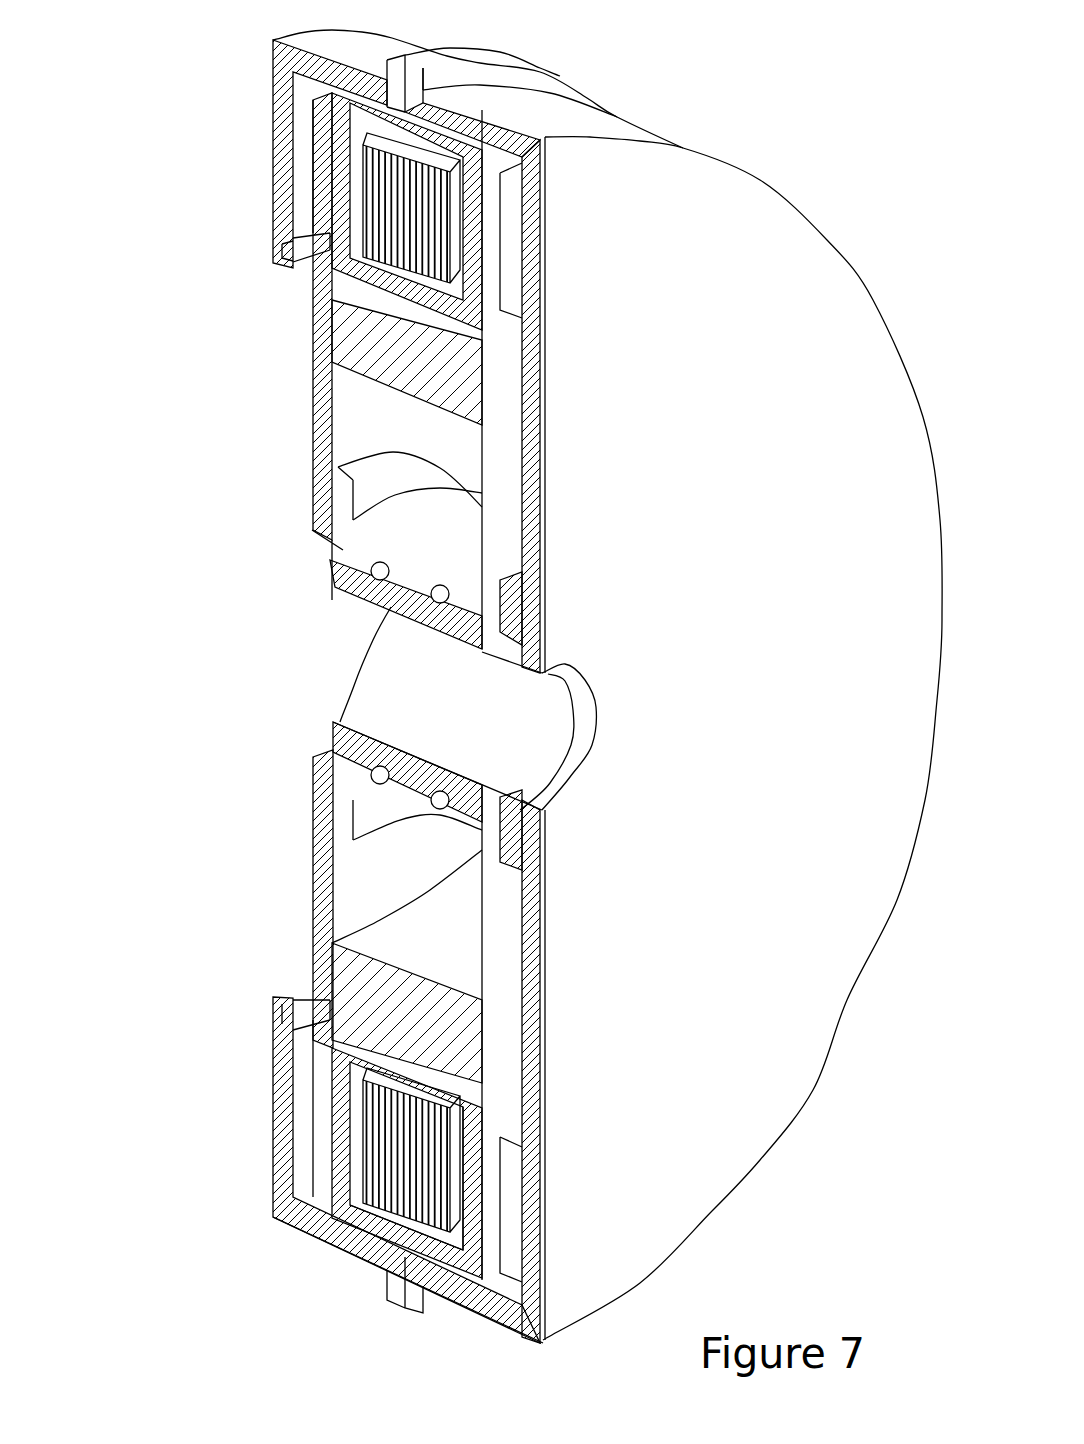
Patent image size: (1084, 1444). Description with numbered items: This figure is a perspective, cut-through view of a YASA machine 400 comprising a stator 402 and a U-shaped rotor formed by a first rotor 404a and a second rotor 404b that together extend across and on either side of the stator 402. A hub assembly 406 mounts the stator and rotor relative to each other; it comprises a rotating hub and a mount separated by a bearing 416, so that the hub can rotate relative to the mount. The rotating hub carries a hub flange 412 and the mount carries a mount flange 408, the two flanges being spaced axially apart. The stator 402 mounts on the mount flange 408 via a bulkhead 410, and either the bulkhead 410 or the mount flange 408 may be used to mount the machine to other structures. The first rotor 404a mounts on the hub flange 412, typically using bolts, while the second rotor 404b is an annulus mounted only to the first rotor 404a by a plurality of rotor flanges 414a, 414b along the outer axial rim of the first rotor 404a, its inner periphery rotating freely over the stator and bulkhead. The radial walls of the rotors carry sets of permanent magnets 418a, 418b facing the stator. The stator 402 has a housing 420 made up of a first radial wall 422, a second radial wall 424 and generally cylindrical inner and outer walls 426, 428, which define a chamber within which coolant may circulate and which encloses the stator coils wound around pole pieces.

The YASA machine 400 is at (175, 124).
The stator 402 is at (347, 1192).
The first rotor 404a is at (665, 237).
The second rotor 404b is at (290, 65).
The hub assembly 406 is at (445, 697).
The mount flange 408 is at (363, 490).
The bulkhead 410 is at (318, 398).
The hub flange 412 is at (513, 605).
The rotor flange 414a is at (470, 65).
The rotor flange 414b is at (390, 72).
The bearing 416 is at (380, 567).
The permanent magnets 418a is at (512, 234).
The permanent magnets 418b is at (305, 207).
The housing 420 is at (458, 181).
The first radial wall 422 is at (478, 1190).
The second radial wall 424 is at (340, 1133).
The inner wall 426 is at (380, 333).
The outer wall 428 is at (380, 1217).